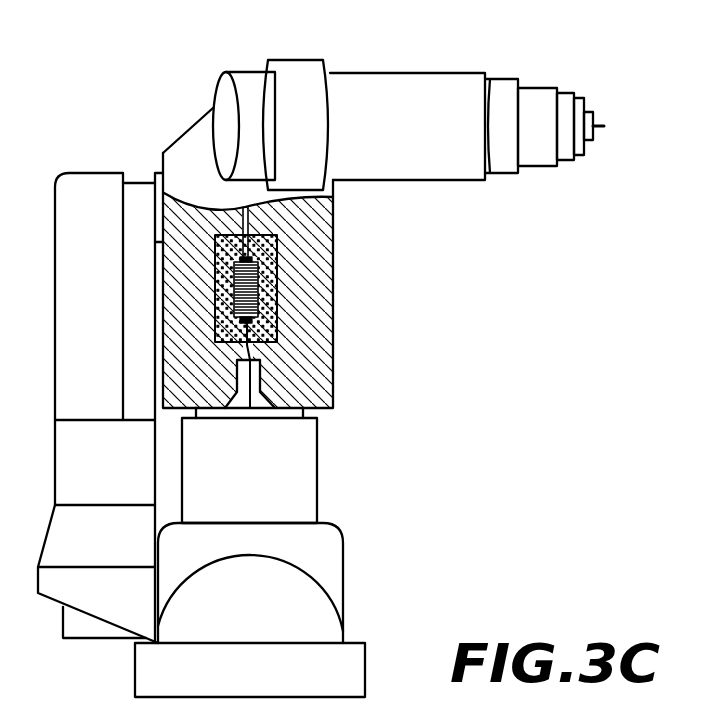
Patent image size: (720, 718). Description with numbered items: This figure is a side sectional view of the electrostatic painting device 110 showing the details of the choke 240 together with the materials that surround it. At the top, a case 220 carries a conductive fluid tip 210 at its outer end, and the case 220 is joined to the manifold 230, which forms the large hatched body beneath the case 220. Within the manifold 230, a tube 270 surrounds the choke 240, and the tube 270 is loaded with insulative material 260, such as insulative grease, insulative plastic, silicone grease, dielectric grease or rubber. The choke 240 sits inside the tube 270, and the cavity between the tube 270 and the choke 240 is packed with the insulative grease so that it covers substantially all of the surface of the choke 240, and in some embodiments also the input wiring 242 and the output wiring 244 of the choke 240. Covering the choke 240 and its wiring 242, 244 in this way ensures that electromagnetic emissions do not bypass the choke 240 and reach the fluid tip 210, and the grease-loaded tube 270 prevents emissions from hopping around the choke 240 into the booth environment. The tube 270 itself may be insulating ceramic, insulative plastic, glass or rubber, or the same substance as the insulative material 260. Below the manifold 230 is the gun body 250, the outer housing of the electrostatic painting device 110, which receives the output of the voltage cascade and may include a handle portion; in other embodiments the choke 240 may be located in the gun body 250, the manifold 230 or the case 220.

The electrostatic painting device 110 is at (118, 64).
The conductive fluid tip 210 is at (615, 110).
The case 220 is at (400, 73).
The manifold 230 is at (163, 150).
The choke 240 is at (258, 298).
The input wiring 242 is at (262, 332).
The output wiring 244 is at (251, 256).
The gun body 250 is at (366, 558).
The insulative material 260 is at (272, 277).
The tube 270 is at (266, 234).